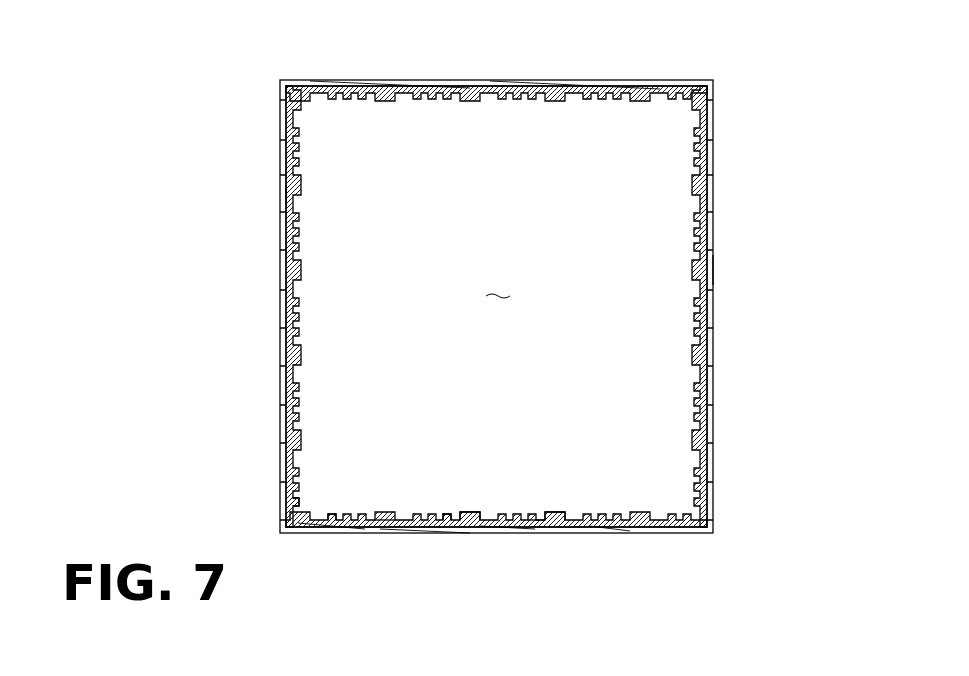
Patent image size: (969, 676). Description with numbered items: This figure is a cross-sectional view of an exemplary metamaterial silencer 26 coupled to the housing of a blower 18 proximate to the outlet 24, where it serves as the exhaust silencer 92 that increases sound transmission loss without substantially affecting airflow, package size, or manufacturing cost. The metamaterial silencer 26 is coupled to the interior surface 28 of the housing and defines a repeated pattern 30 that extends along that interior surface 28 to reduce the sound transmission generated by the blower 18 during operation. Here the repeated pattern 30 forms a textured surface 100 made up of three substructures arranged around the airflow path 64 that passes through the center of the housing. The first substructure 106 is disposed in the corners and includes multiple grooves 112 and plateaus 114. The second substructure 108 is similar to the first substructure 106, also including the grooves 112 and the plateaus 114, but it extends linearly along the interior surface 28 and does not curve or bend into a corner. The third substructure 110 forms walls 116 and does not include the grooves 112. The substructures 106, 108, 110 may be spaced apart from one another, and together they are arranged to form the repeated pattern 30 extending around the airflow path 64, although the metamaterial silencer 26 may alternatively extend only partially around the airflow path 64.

The blower 18 is at (740, 118).
The outlet 24 is at (713, 172).
The metamaterial silencer 26 is at (276, 137).
The interior surface 28 is at (490, 96).
The repeated pattern 30 is at (722, 266).
The airflow path 64 is at (497, 285).
The exhaust silencer 92 is at (288, 195).
The textured surface 100 is at (713, 305).
The first substructure 106 is at (318, 520).
The second substructure 108 is at (398, 522).
The third substructure 110 is at (545, 525).
The grooves 112 is at (327, 516).
The plateaus 114 is at (300, 494).
The walls 116 is at (552, 515).